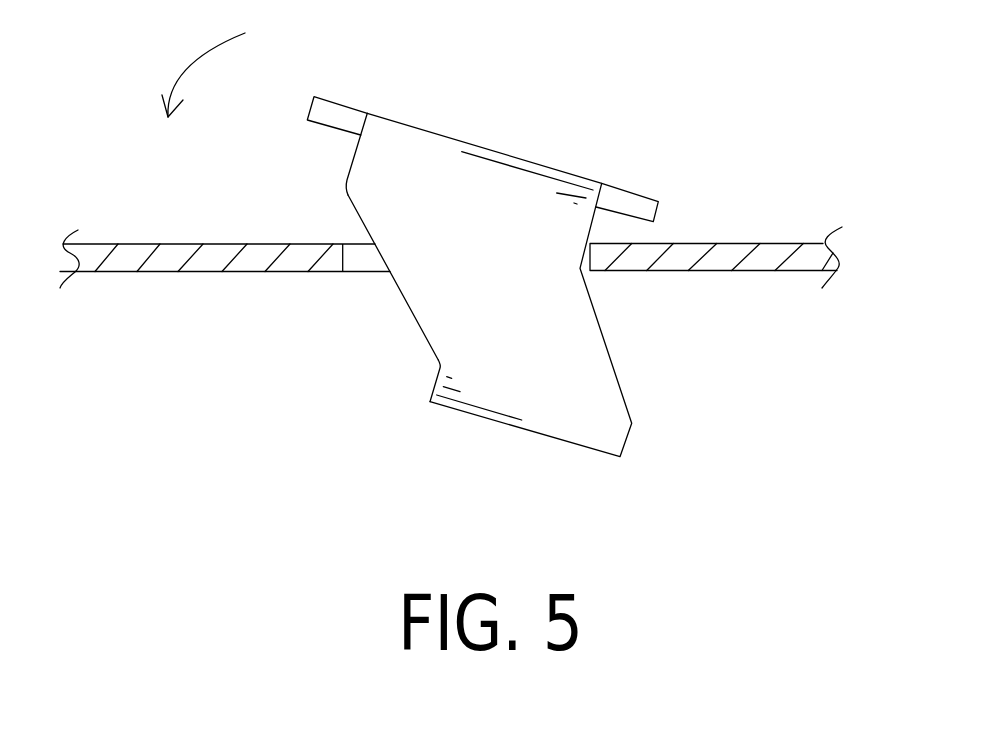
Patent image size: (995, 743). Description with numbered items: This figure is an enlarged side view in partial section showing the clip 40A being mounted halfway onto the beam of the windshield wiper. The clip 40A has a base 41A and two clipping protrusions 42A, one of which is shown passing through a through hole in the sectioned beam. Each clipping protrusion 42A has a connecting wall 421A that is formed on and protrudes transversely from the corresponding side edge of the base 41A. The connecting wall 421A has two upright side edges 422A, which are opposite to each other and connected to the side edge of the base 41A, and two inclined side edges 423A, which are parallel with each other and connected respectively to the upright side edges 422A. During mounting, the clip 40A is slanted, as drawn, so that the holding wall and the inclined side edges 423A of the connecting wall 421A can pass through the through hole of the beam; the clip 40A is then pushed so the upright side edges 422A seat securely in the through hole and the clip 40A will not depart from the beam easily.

The clip 40A is at (484, 251).
The base 41A is at (335, 117).
The clipping protrusion 42A is at (633, 355).
The connecting wall 421A is at (412, 290).
The upright side edge 422A is at (349, 173).
The inclined side edge 423A is at (423, 338).